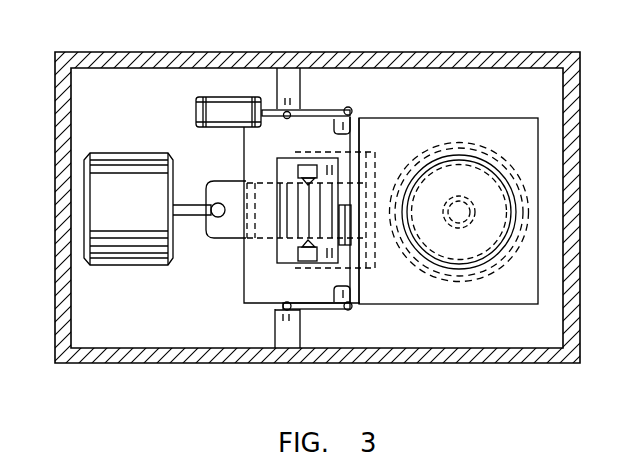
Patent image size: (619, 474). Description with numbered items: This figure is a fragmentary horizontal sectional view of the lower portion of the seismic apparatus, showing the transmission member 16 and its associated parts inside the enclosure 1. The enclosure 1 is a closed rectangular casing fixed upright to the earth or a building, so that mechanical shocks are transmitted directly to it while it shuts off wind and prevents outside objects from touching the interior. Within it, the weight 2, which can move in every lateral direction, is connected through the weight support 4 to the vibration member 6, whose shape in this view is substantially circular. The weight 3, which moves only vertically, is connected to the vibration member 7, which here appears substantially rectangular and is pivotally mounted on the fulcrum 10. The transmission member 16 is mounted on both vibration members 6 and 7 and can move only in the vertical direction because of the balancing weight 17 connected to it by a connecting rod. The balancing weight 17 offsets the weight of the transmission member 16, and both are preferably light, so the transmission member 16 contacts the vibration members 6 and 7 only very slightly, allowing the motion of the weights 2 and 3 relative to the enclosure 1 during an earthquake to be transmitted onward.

The enclosure 1 is at (98, 62).
The weight 2 is at (453, 160).
The weight 3 is at (122, 260).
The weight support 4 is at (462, 216).
The vibration member 6 is at (493, 157).
The vibration member 7 is at (223, 240).
The fulcrum 10 is at (308, 163).
The transmission member 16 is at (402, 132).
The balancing weight 17 is at (224, 110).